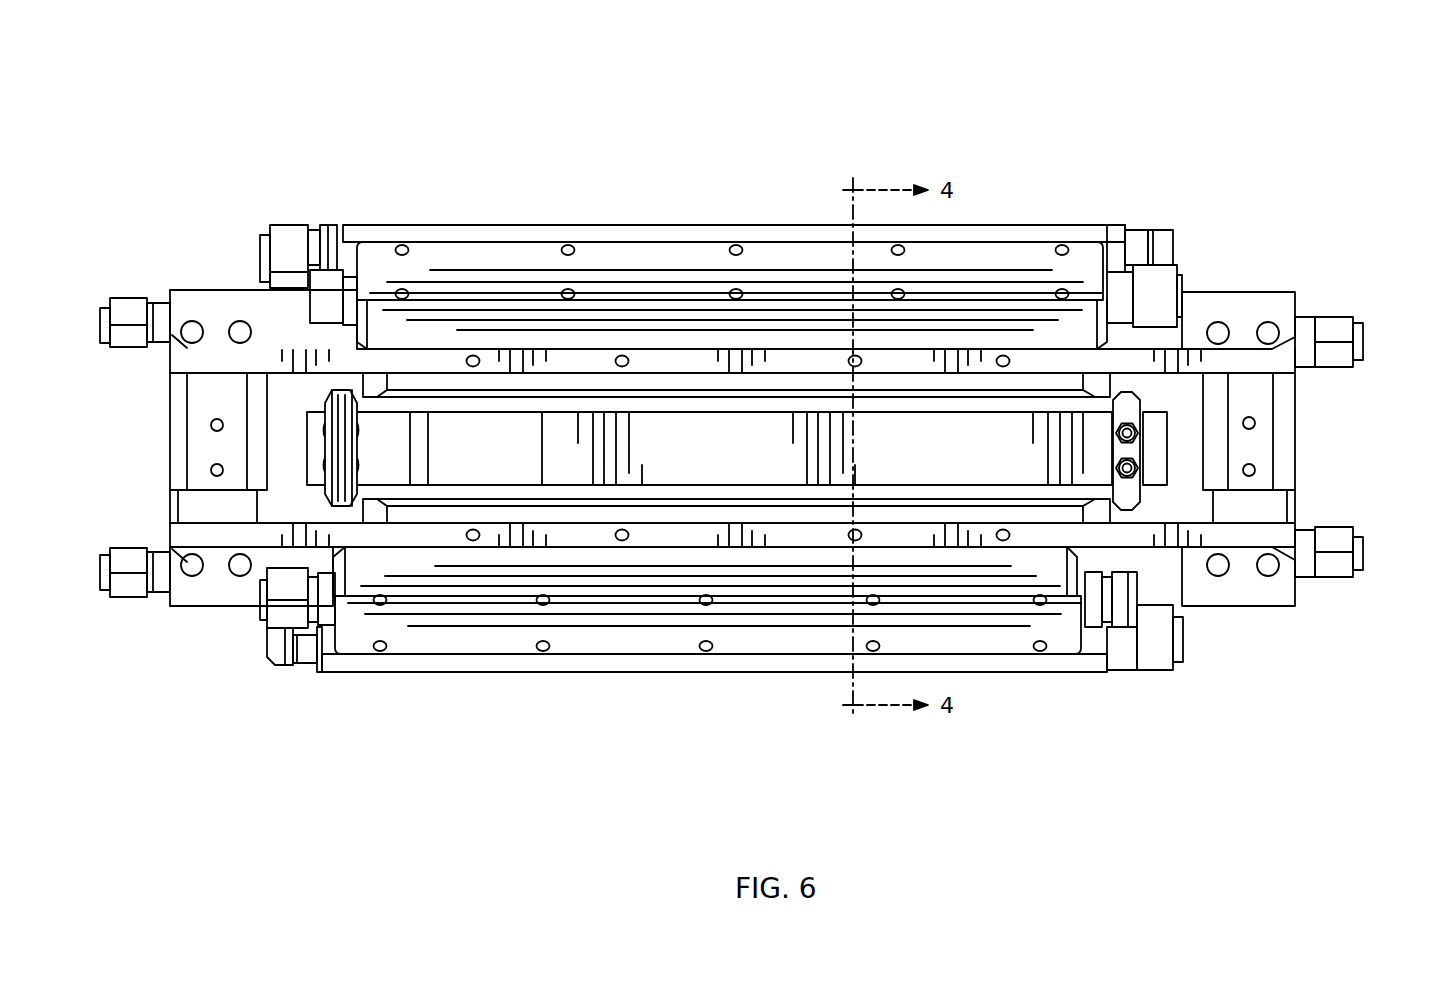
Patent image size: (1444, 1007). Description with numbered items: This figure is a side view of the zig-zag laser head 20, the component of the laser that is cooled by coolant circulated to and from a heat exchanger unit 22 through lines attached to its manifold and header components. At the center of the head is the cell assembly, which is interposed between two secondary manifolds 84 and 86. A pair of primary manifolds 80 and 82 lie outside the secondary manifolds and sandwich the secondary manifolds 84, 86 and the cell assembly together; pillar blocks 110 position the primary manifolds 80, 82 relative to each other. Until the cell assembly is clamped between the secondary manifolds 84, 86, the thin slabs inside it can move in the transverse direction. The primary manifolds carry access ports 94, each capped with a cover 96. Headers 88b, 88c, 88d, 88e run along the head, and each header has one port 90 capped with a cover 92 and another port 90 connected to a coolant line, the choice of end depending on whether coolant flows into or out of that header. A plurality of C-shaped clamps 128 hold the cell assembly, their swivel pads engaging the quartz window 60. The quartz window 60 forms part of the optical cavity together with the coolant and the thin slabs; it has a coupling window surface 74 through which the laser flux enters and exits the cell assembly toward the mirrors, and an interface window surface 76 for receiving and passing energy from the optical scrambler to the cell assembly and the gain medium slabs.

The zig-zag laser head 20 is at (1160, 92).
The heat exchanger unit 22 is at (1025, 470).
The quartz window 60 is at (700, 460).
The coupling window surface 74 is at (477, 462).
The interface window surface 76 is at (667, 430).
The primary manifold 80 is at (200, 302).
The primary manifold 82 is at (222, 596).
The secondary manifold 84 is at (1088, 392).
The secondary manifold 86 is at (1088, 505).
The header 88b is at (373, 235).
The header 88c is at (455, 255).
The header 88d is at (618, 638).
The header 88e is at (482, 660).
The port 90 is at (322, 280).
The cover 92 is at (290, 232).
The access port 94 is at (1303, 322).
The cover 96 is at (130, 600).
The pillar block 110 is at (1270, 508).
The clamp 128 is at (1140, 507).